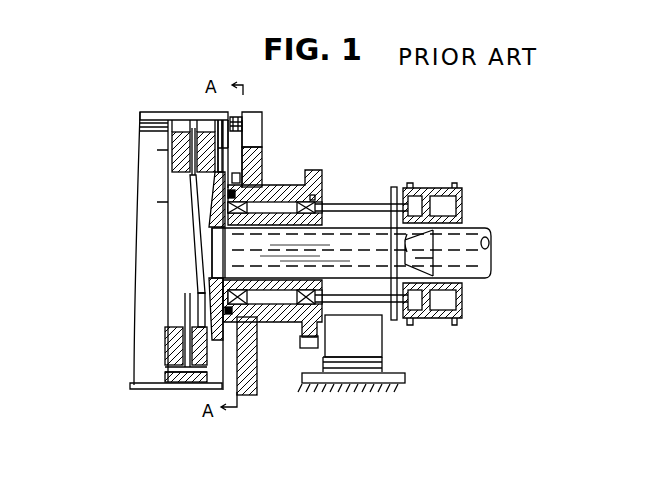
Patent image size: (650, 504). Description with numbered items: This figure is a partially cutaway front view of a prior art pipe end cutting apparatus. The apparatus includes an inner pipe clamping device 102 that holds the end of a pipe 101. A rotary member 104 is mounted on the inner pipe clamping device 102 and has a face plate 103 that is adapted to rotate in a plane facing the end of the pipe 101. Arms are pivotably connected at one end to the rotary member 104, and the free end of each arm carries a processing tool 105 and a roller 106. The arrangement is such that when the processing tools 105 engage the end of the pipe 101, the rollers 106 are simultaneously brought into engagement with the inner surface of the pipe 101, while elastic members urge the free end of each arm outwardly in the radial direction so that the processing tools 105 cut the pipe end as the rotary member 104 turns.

The pipe 101 is at (182, 385).
The inner pipe clamping device 102 is at (170, 168).
The face plate 103 is at (266, 113).
The rotary member 104 is at (288, 190).
The processing tool 105 is at (236, 117).
The roller 106 is at (221, 128).